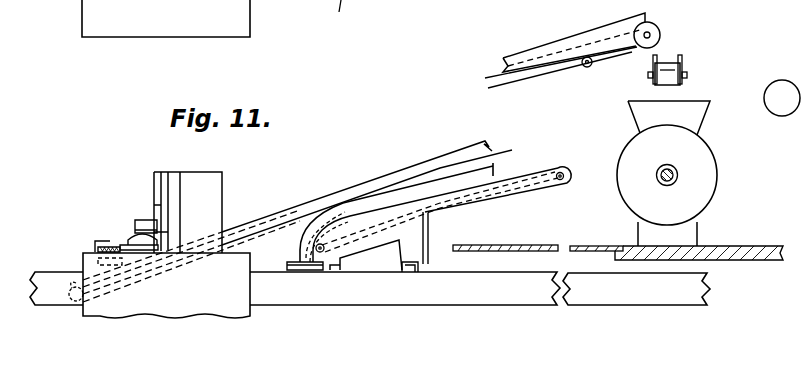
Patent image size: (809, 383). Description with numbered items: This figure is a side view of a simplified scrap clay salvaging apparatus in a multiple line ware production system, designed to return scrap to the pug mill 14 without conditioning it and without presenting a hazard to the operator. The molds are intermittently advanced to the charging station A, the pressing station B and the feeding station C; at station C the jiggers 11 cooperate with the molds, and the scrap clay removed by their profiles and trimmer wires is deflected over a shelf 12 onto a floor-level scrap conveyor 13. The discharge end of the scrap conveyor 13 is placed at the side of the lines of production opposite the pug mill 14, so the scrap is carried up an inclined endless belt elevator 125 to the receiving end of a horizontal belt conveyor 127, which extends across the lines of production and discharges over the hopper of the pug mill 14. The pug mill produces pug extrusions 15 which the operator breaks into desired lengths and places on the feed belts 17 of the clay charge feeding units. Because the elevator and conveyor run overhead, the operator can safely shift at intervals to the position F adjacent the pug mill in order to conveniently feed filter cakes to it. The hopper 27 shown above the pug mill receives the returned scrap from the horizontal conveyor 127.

The jiggers 11 is at (135, 230).
The shelf 12 is at (125, 243).
The scrap conveyor 13 is at (95, 241).
The pug mill 14 is at (710, 178).
The pug extrusions 15 is at (495, 168).
The feed belts 17 is at (565, 163).
The hopper 27 is at (695, 112).
The inclined endless belt elevator 125 is at (475, 127).
The horizontal belt conveyor 127 is at (666, 63).
The charging station A is at (294, 257).
The pressing station B is at (213, 165).
The feeding station C is at (146, 215).
The position adjacent the pug mill F is at (782, 98).